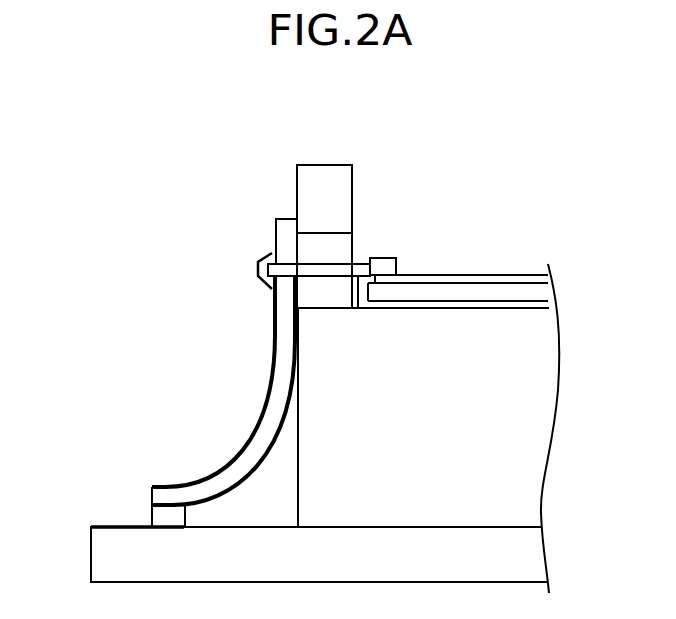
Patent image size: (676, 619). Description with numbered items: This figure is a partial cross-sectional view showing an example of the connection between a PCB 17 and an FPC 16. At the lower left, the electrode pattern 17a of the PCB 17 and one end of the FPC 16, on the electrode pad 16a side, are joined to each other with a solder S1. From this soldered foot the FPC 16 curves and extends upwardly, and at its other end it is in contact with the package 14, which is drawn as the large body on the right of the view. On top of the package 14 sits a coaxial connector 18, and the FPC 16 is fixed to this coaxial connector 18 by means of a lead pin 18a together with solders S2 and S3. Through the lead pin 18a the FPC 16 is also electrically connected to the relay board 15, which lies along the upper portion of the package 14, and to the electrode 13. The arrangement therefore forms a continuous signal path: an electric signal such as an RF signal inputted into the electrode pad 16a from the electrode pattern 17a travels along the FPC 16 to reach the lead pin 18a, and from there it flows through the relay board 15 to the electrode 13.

The electrode 13 is at (535, 270).
The package 14 is at (525, 457).
The relay board 15 is at (438, 293).
The FPC 16 is at (265, 422).
The electrode pad 16a is at (167, 503).
The PCB 17 is at (112, 554).
The electrode pattern 17a is at (109, 524).
The coaxial connector 18 is at (342, 253).
The lead pin 18a is at (317, 257).
The solder S1 is at (157, 515).
The solder S2 is at (260, 267).
The solder S3 is at (383, 257).